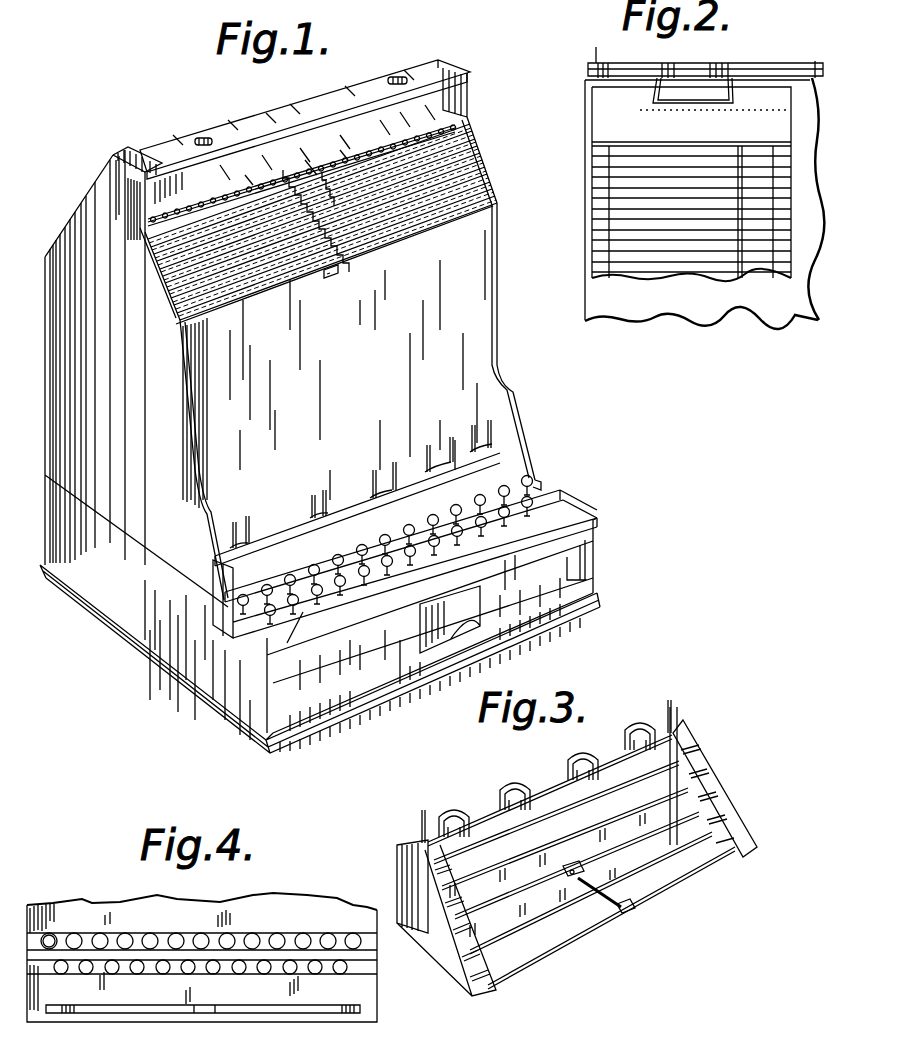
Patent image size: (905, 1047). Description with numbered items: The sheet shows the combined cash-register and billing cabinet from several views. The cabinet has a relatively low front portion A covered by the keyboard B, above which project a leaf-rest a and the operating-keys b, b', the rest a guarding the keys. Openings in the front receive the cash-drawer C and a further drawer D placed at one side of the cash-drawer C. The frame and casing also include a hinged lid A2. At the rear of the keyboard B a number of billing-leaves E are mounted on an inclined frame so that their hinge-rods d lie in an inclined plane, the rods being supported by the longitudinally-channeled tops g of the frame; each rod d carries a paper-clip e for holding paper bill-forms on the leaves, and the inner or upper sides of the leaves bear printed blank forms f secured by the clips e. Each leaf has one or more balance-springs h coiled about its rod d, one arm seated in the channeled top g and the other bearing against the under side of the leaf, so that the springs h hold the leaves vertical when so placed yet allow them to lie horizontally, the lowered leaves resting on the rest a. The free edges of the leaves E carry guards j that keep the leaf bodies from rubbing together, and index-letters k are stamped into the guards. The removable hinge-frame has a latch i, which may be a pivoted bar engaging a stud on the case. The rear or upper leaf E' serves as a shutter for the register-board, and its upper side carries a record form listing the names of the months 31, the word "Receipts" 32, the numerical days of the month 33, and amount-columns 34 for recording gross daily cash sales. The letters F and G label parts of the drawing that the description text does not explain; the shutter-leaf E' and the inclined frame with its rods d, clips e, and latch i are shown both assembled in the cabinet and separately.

In FIG. 1, the hinged lid A2 is at (468, 72).
In FIG. 1, the rear or upper leaf E' is at (331, 146).
In FIG. 2, the rear or upper leaf E' is at (704, 217).
In FIG. 1, the bead guide rail F is at (478, 138).
In FIG. 1, the slat shutter G is at (480, 160).
In FIG. 1, the guards j is at (345, 271).
In FIG. 1, the index-letters k is at (333, 278).
In FIG. 1, the billing-leaves E is at (360, 401).
In FIG. 1, the balance-springs h is at (490, 438).
In FIG. 3, the balance-springs h is at (415, 838).
In FIG. 1, the operating-keys b is at (381, 556).
In FIG. 4, the operating-keys b is at (202, 939).
In FIG. 1, the leaf-rest a is at (560, 490).
In FIG. 4, the leaf-rest a is at (335, 1013).
In FIG. 1, the keyboard B is at (577, 505).
In FIG. 4, the keyboard B is at (365, 988).
In FIG. 1, the front portion A is at (583, 542).
In FIG. 1, the cash-drawer C is at (577, 573).
In FIG. 1, the drawer D is at (293, 712).
In FIG. 2, the hinge-rods d is at (588, 68).
In FIG. 3, the hinge-rods d is at (547, 783).
In FIG. 2, the names of the months 31 is at (596, 106).
In FIG. 2, the word "Receipts" 32 is at (640, 124).
In FIG. 2, the numerical days of the month 33 is at (594, 148).
In FIG. 2, the printed blank forms f is at (780, 98).
In FIG. 2, the paper-clip e is at (740, 100).
In FIG. 3, the paper-clip e is at (515, 788).
In FIG. 2, the amount-columns 34 is at (754, 266).
In FIG. 3, the channeled tops g is at (750, 800).
In FIG. 3, the latch i is at (636, 910).
In FIG. 4, the operating-key b' is at (49, 908).